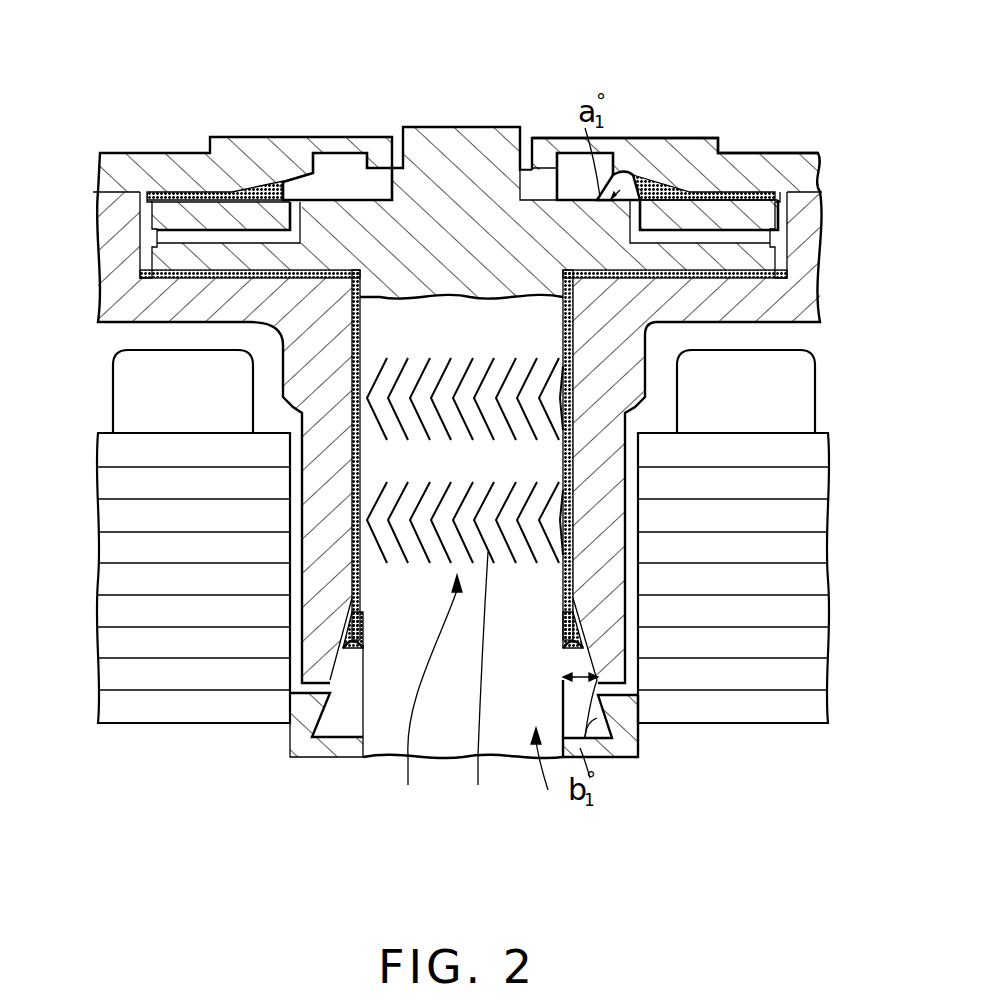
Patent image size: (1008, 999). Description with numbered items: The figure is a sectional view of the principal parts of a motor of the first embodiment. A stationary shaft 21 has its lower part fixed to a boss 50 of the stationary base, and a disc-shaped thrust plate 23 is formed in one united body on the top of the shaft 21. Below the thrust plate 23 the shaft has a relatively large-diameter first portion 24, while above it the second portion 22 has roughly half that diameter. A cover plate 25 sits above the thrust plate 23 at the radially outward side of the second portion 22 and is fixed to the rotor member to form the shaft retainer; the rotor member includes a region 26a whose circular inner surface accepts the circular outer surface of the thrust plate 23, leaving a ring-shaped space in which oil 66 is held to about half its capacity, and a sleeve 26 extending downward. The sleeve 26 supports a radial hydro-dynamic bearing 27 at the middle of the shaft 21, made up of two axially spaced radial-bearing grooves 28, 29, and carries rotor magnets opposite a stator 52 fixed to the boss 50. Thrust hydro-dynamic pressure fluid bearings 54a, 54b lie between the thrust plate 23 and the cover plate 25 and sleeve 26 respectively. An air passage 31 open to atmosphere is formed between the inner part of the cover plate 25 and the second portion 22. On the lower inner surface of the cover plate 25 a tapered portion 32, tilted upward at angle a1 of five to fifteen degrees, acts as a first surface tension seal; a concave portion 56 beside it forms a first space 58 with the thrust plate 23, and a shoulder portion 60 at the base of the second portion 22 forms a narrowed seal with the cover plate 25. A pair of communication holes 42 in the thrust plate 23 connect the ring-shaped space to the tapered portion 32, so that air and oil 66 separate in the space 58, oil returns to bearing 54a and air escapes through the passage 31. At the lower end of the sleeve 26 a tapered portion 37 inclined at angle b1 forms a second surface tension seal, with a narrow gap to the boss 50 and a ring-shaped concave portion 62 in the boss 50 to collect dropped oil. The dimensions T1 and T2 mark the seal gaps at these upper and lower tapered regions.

The stationary shaft 21 is at (546, 778).
The second portion 22 is at (473, 142).
The thrust plate 23 is at (724, 185).
The first portion 24 is at (528, 465).
The cover plate 25 is at (693, 147).
The sleeve 26 is at (620, 372).
The region of the axially extending portion 26a is at (168, 275).
The radial hydro-dynamic bearing 27 is at (429, 701).
The radial-bearing groove 28 is at (540, 420).
The radial-bearing groove 29 is at (477, 690).
The air passage 31 is at (523, 147).
The tapered portion 32 is at (637, 187).
The tapered portion 37 is at (343, 650).
The communication hole 42 is at (190, 235).
The boss 50 is at (635, 738).
The stator 52 is at (818, 613).
The thrust hydro-dynamic pressure fluid bearing 54a is at (233, 180).
The thrust hydro-dynamic pressure fluid bearing 54b is at (171, 285).
The concave portion 56 is at (597, 197).
The first space 58 is at (573, 175).
The shoulder portion 60 is at (375, 182).
The ring-shaped concave portion 62 is at (600, 742).
The oil 66 is at (762, 193).
The thickness dimension T1 is at (613, 199).
The gap dimension T2 is at (563, 677).